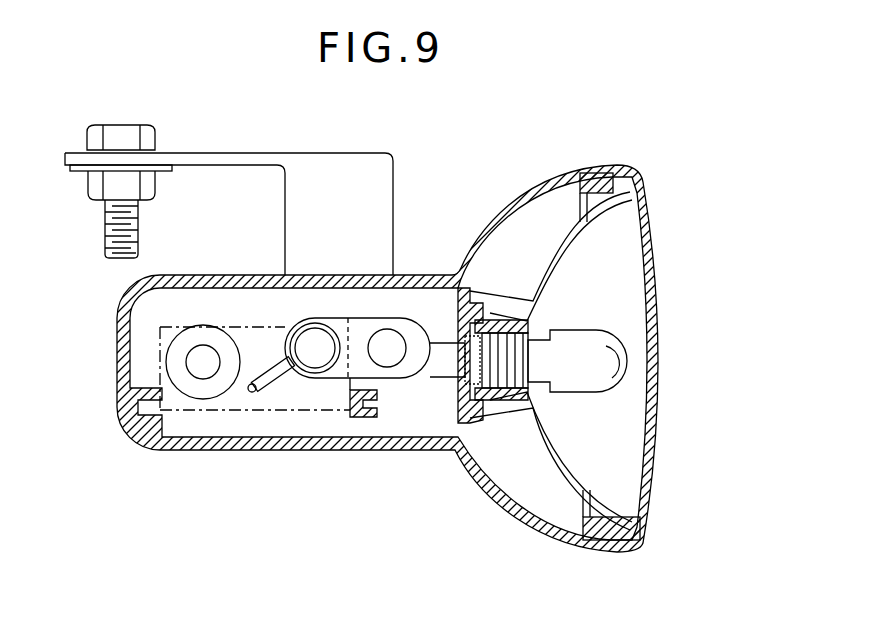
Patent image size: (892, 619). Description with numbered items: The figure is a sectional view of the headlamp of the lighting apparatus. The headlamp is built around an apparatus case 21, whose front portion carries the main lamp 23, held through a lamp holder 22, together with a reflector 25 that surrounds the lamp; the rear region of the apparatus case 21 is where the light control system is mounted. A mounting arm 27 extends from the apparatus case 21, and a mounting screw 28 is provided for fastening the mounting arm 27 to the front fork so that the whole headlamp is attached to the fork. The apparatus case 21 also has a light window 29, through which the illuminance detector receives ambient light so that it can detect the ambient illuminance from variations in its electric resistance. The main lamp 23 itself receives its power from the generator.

The apparatus case 21 is at (295, 450).
The lamp holder 22 is at (460, 416).
The main lamp 23 is at (603, 350).
The reflector 25 is at (567, 252).
The mounting arm 27 is at (222, 163).
The mounting screw 28 is at (103, 237).
The light window 29 is at (203, 365).